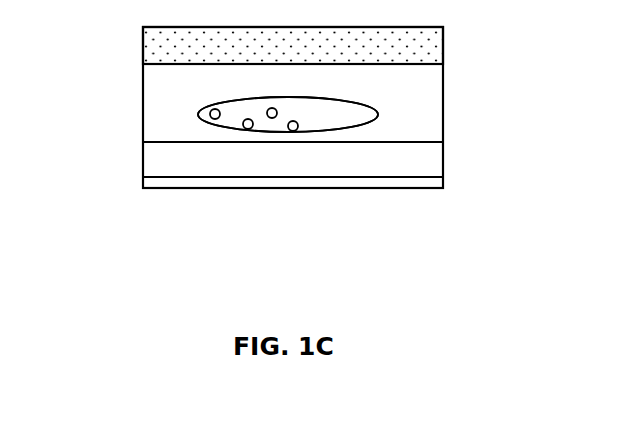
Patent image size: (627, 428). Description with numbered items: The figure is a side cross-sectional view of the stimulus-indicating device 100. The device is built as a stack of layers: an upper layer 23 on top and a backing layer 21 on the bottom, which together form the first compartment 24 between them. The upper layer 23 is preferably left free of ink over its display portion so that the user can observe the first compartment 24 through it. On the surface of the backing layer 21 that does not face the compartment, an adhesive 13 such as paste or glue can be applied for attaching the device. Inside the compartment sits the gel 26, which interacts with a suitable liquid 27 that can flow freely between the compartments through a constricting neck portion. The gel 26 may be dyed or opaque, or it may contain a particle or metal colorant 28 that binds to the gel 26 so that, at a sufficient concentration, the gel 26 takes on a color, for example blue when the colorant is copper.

The stimulus-indicating device 100 is at (284, 218).
The upper layer 23 is at (432, 40).
The first compartment 24 is at (422, 108).
The backing layer 21 is at (453, 153).
The adhesive 13 is at (403, 194).
The liquid 27 is at (383, 96).
The particle or metal colorant 28 is at (195, 117).
The gel 26 is at (312, 127).